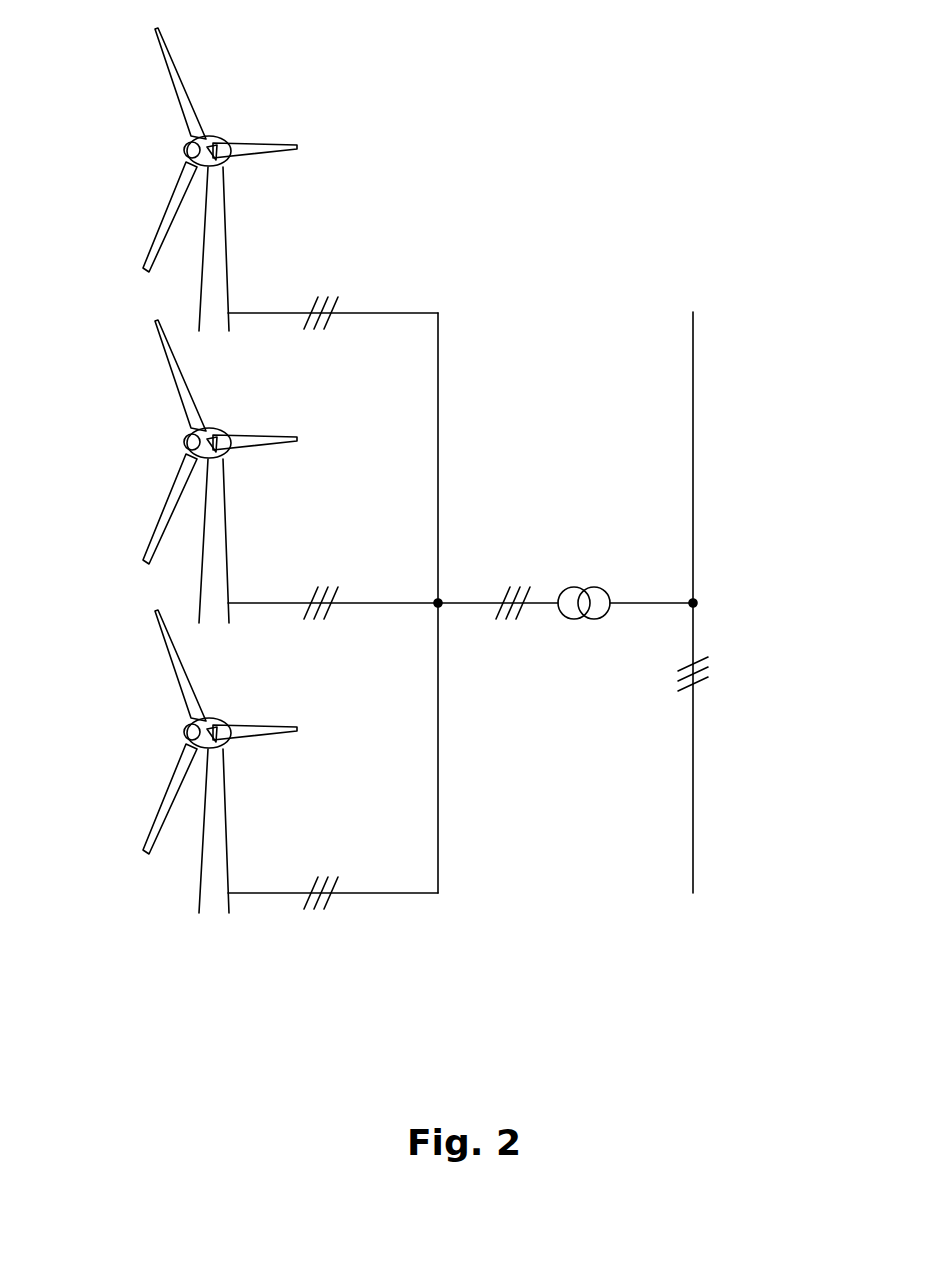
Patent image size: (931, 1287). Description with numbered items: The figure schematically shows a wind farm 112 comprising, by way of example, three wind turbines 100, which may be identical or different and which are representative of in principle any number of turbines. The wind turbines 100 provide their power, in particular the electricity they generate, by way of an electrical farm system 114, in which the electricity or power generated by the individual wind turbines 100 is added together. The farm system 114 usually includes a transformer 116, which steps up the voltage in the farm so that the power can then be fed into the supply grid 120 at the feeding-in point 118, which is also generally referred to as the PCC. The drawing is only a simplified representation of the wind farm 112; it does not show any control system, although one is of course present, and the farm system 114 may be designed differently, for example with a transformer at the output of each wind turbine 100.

The wind turbine 100 is at (217, 236).
The wind farm 112 is at (385, 470).
The electrical farm system 114 is at (460, 603).
The transformer 116 is at (586, 570).
The feeding-in point 118 is at (705, 574).
The supply grid 120 is at (693, 343).